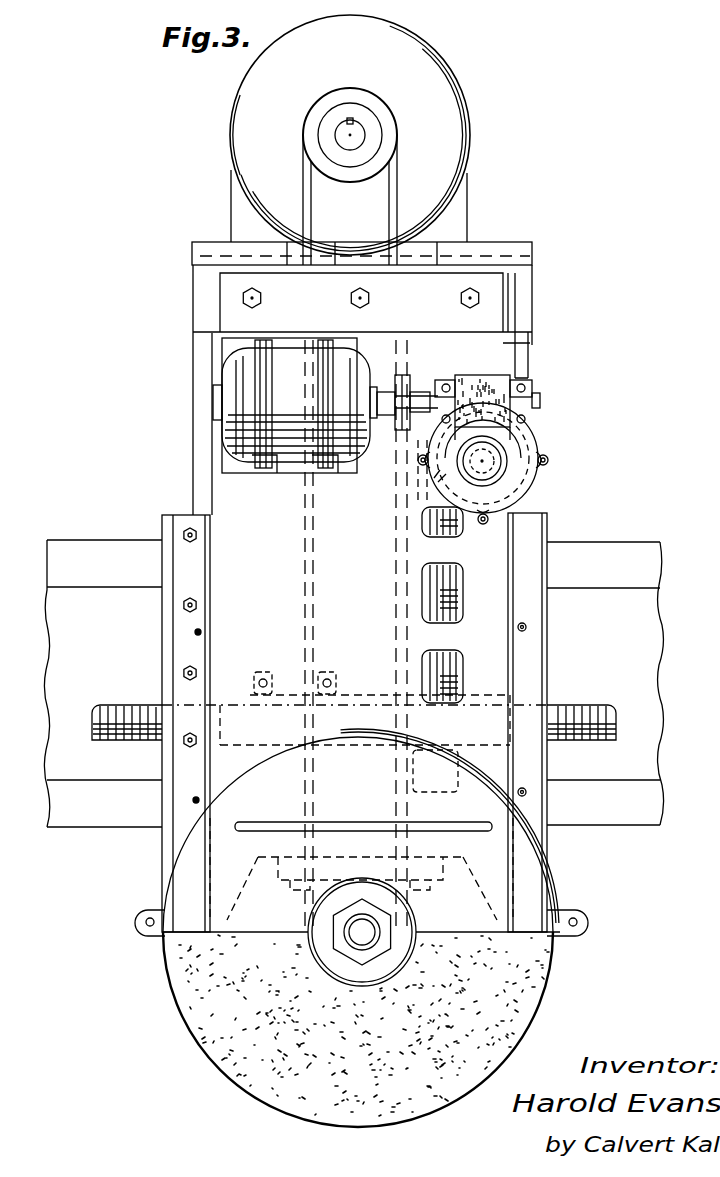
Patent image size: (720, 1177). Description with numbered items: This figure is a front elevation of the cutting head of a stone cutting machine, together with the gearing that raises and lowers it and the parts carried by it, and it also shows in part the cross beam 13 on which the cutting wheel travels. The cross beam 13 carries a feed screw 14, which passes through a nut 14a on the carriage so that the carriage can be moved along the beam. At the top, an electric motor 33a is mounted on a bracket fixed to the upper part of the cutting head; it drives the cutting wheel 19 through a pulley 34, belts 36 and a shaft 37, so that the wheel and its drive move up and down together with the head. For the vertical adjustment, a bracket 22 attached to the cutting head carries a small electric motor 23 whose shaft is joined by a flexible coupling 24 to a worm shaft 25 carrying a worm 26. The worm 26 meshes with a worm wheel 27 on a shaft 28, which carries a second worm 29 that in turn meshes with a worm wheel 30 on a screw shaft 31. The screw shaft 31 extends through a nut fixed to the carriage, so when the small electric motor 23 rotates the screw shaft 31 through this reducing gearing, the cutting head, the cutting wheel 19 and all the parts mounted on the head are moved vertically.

The cross beam 13 is at (632, 551).
The feed screw 14 is at (590, 704).
The nut 14a is at (240, 692).
The cutting wheel 19 is at (206, 985).
The bracket 22 is at (232, 348).
The small electric motor 23 is at (232, 437).
The flexible coupling 24 is at (403, 375).
The worm shaft 25 is at (431, 386).
The worm 26 is at (526, 368).
The worm wheel 27 is at (535, 446).
The shaft 28 is at (496, 465).
The worm 29 is at (549, 453).
The worm wheel 30 is at (414, 487).
The screw shaft 31 is at (446, 598).
The electric motor 33a is at (243, 121).
The pulley 34 is at (385, 123).
The belts 36 is at (390, 207).
The shaft 37 is at (372, 930).